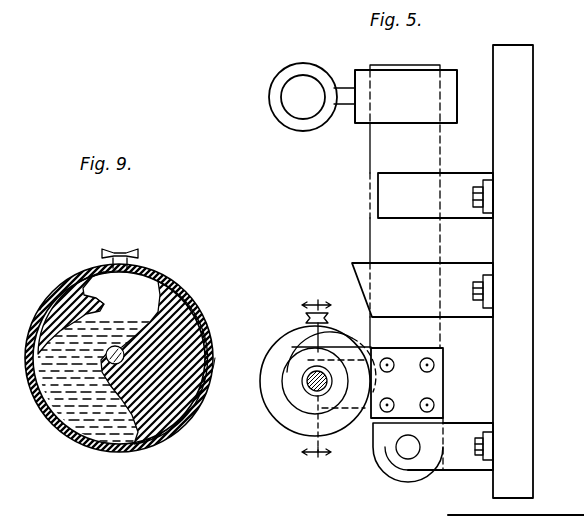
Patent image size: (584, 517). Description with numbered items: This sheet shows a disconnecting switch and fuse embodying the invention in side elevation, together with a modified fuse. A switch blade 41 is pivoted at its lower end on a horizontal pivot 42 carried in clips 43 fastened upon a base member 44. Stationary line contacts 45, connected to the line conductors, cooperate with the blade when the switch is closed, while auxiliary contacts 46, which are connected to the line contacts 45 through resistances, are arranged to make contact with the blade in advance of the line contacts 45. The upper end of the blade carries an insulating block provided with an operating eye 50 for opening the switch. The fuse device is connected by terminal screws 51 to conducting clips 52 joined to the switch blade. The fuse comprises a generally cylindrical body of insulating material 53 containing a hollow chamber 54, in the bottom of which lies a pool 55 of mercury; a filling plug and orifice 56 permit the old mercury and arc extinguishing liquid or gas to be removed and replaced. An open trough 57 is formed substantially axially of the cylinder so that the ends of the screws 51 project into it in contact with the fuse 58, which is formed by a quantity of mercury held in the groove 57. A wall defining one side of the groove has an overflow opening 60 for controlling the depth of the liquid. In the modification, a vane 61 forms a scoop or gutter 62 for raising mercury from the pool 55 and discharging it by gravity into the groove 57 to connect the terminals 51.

In FIG. 5, the switch blade 41 is at (380, 152).
In FIG. 5, the horizontal pivot 42 is at (407, 441).
In FIG. 5, the clips 43 is at (448, 460).
In FIG. 5, the base member 44 is at (498, 368).
In FIG. 5, the stationary line contacts 45 is at (385, 195).
In FIG. 5, the auxiliary contacts 46 is at (363, 272).
In FIG. 5, the operating eye 50 is at (306, 66).
In FIG. 9, the terminal screws 51 is at (212, 332).
In FIG. 5, the terminal screws 51 is at (308, 387).
In FIG. 5, the conducting clips 52 is at (322, 409).
In FIG. 9, the body of insulating material 53 is at (176, 312).
In FIG. 9, the hollow chamber 54 is at (133, 297).
In FIG. 9, the pool of mercury 55 is at (84, 445).
In FIG. 9, the filling plug and orifice 56 is at (123, 252).
In FIG. 9, the open trough 57 is at (48, 305).
In FIG. 9, the fuse 58 is at (217, 364).
In FIG. 9, the overflow opening 60 is at (106, 362).
In FIG. 9, the vane 61 is at (76, 284).
In FIG. 9, the scoop or gutter 62 is at (91, 281).